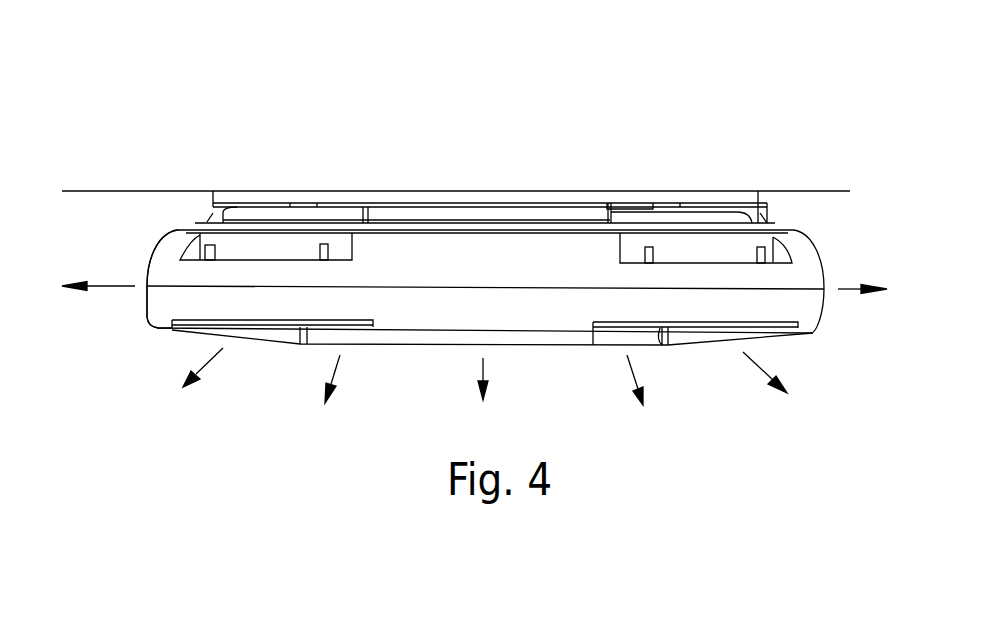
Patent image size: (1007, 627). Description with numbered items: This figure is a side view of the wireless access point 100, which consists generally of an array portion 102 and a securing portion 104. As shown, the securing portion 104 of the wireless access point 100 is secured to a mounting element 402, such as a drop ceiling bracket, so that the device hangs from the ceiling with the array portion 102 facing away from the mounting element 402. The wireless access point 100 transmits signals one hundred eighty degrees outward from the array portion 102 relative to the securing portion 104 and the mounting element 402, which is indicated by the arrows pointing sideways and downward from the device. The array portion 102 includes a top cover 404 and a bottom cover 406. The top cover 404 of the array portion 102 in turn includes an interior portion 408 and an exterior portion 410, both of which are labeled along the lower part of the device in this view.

The wireless access point 100 is at (719, 145).
The array portion 102 is at (422, 253).
The securing portion 104 is at (365, 205).
The mounting element 402 is at (802, 191).
The top cover 404 is at (147, 317).
The bottom cover 406 is at (168, 255).
The interior portion 408 is at (537, 335).
The exterior portion 410 is at (667, 345).